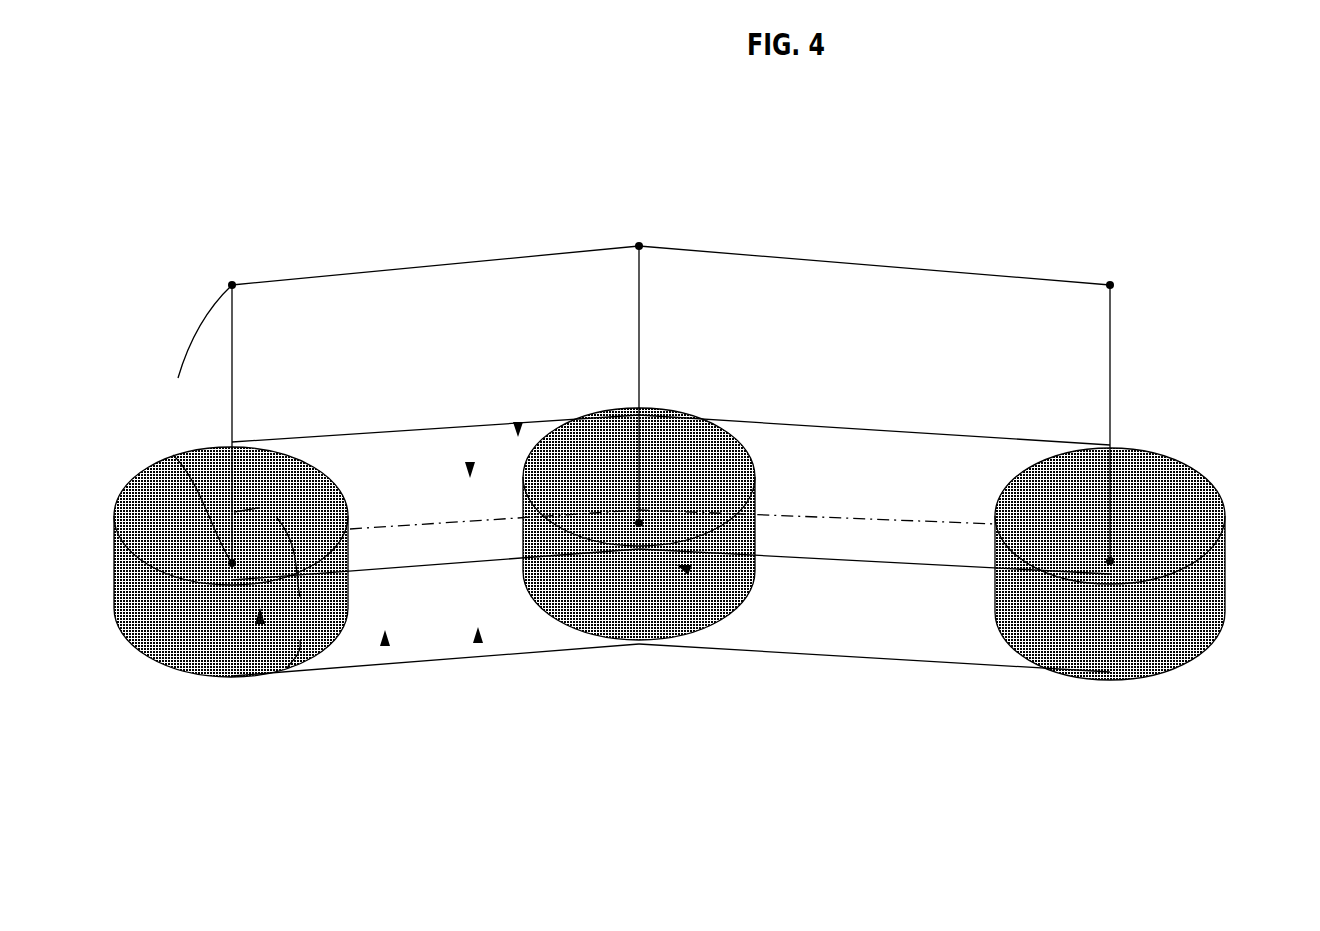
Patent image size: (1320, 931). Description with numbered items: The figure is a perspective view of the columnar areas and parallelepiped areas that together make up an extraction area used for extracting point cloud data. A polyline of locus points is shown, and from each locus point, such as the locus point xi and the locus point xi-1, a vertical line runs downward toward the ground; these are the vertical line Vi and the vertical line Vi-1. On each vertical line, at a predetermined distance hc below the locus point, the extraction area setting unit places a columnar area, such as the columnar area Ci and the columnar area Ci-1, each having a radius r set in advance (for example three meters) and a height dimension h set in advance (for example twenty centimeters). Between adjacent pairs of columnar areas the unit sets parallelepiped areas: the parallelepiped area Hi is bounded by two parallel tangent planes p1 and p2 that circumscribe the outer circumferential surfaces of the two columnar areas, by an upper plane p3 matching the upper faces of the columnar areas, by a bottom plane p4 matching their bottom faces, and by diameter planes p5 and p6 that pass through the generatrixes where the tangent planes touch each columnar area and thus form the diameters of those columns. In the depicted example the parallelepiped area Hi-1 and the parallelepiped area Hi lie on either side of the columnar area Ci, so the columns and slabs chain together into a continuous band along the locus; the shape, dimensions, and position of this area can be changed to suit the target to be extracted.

The parallelepiped area Hi is at (417, 647).
The parallelepiped area Hi-1 is at (853, 645).
The columnar area Ci is at (585, 605).
The columnar area Ci-1 is at (1129, 648).
The vertical line Vi is at (639, 330).
The vertical line Vi-1 is at (1112, 365).
The locus point xi is at (639, 211).
The locus point xi-1 is at (1131, 245).
The predetermined distance hc is at (179, 424).
The radius r is at (256, 504).
The height dimension h is at (303, 593).
The tangent plane p1 is at (479, 642).
The tangent plane p2 is at (471, 462).
The upper plane p3 is at (519, 425).
The bottom plane p4 is at (385, 645).
The diameter plane p5 is at (690, 570).
The diameter plane p6 is at (259, 622).